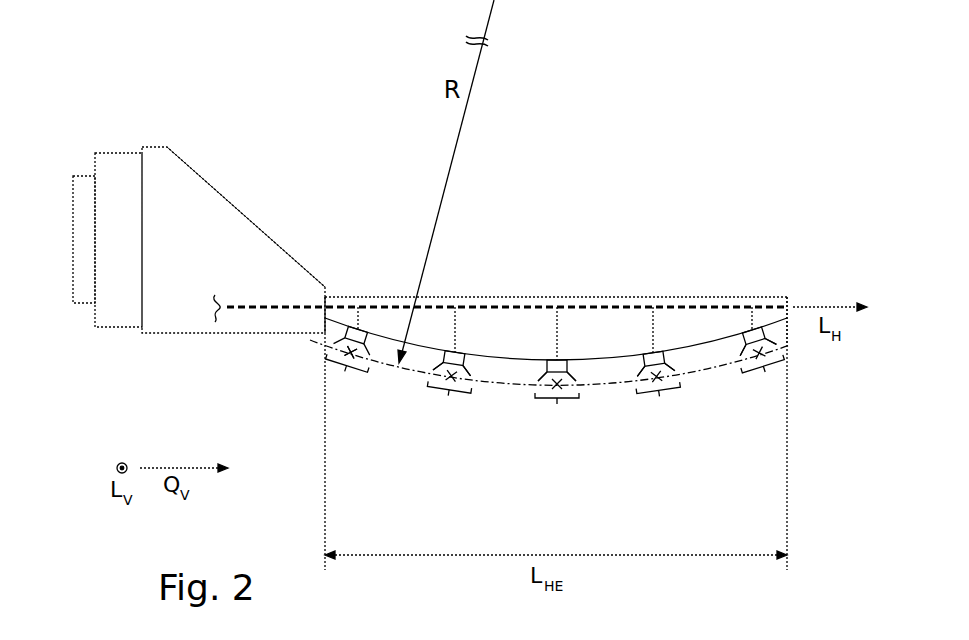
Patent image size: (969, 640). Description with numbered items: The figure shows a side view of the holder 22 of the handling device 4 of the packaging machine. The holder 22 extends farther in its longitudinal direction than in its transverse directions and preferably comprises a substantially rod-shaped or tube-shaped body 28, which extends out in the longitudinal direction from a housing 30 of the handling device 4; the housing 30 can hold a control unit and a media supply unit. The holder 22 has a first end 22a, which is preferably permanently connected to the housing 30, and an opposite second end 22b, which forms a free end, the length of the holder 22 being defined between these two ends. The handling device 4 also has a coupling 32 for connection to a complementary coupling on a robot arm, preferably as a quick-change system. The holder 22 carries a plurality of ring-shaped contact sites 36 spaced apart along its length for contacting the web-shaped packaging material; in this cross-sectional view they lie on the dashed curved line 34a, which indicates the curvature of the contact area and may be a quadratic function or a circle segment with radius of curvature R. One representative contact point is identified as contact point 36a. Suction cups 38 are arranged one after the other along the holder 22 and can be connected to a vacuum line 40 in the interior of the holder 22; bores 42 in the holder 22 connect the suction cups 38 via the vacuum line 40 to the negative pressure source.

The handling device 4 is at (350, 104).
The holder 22 is at (539, 246).
The first end 22a is at (338, 298).
The second end 22b is at (773, 295).
The body 28 is at (763, 308).
The housing 30 is at (168, 190).
The coupling 32 is at (83, 187).
The curved line 34a is at (318, 342).
The contact sites 36 is at (555, 378).
The contact point 36a is at (357, 357).
The suction cups 38 is at (460, 376).
The vacuum line 40 is at (262, 305).
The bores 42 is at (365, 328).